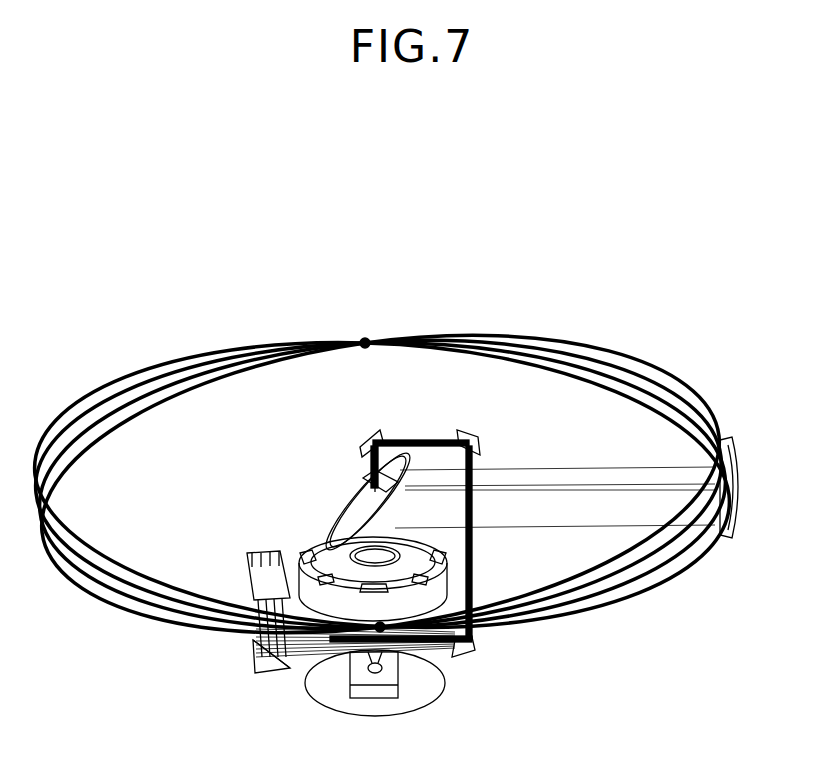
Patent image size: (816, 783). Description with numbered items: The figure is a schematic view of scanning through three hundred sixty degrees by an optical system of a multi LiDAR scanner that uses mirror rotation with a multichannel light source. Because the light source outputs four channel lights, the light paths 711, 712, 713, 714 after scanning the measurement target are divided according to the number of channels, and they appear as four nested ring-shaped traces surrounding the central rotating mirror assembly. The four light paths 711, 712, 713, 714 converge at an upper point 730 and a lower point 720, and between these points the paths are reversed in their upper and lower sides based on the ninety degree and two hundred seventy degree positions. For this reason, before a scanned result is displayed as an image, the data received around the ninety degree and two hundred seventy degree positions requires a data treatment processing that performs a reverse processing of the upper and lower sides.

The light path 711 is at (608, 398).
The light path 712 is at (568, 371).
The light path 713 is at (628, 372).
The light path 714 is at (591, 347).
The lower connection point 720 is at (392, 634).
The upper connection point 730 is at (365, 337).